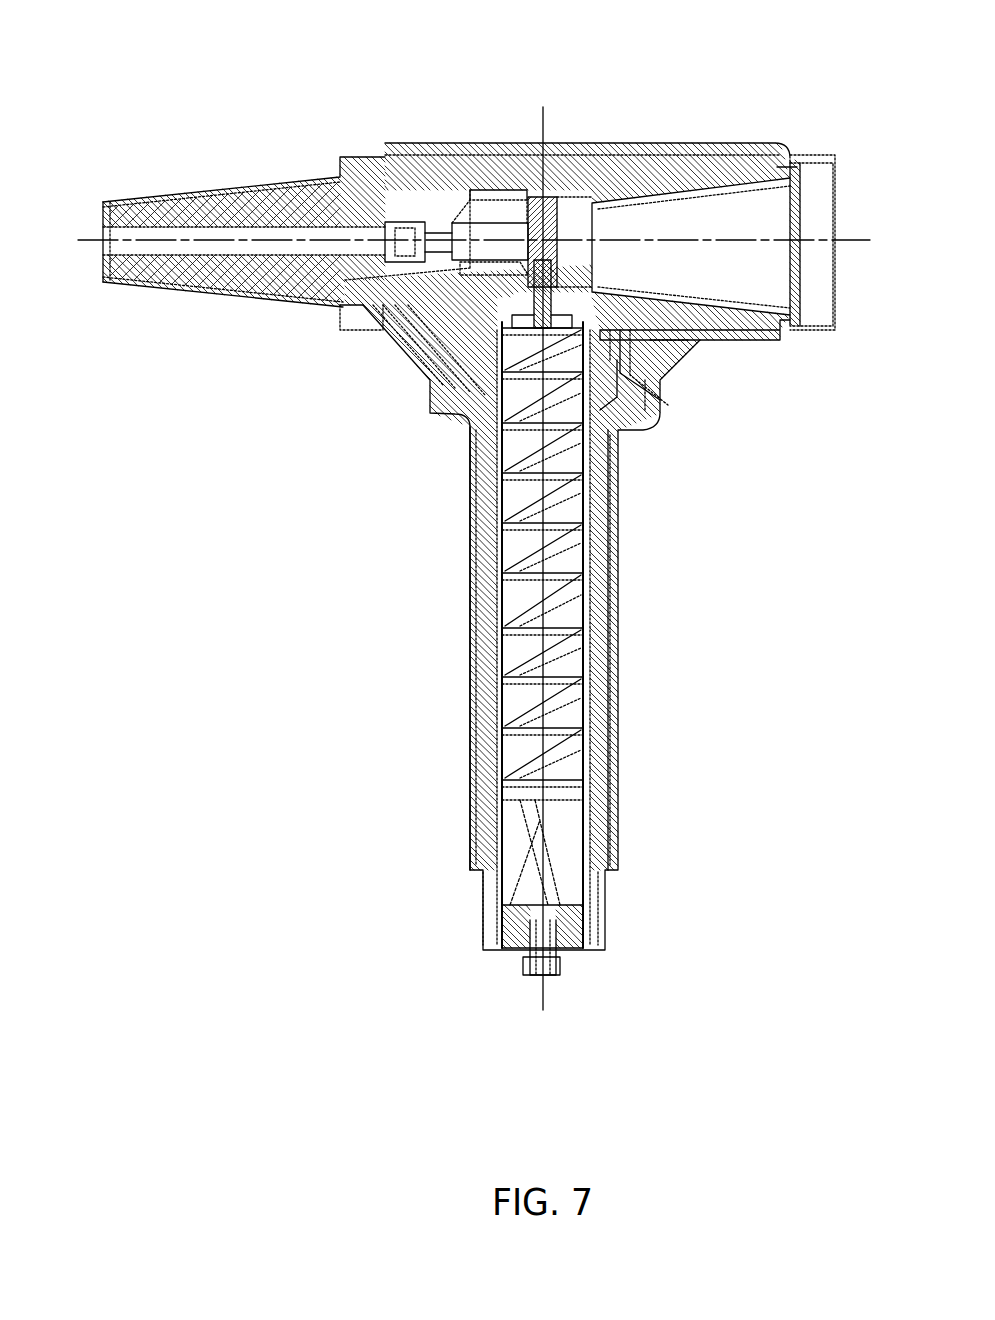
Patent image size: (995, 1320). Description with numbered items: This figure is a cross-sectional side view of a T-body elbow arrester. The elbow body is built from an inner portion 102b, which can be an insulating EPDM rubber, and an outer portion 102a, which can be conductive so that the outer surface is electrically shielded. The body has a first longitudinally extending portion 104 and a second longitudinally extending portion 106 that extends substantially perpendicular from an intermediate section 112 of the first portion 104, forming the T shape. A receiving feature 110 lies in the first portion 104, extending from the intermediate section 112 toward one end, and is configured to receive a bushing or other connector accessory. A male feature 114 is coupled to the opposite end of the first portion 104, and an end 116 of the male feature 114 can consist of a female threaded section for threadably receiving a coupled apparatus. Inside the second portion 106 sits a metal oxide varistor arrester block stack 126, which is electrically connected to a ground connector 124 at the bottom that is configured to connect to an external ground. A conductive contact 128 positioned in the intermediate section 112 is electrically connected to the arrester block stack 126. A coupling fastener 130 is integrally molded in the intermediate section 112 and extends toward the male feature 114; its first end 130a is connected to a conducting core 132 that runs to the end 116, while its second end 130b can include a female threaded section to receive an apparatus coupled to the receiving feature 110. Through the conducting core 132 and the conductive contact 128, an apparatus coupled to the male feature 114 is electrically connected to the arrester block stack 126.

The outer portion 102a is at (358, 325).
The inner portion 102b is at (217, 295).
The first longitudinally extending portion 104 is at (737, 340).
The second longitudinally extending portion 106 is at (470, 630).
The receiving feature 110 is at (753, 178).
The intermediate section 112 is at (543, 150).
The male feature 114 is at (162, 180).
The end of male feature 116 is at (97, 257).
The ground connector 124 is at (547, 975).
The MOV arrester block stack 126 is at (568, 500).
The conductive contact 128 is at (522, 302).
The coupling fastener 130 is at (448, 200).
The first end of coupling fastener 130a is at (388, 218).
The second end of coupling fastener 130b is at (524, 210).
The conducting core 132 is at (243, 235).